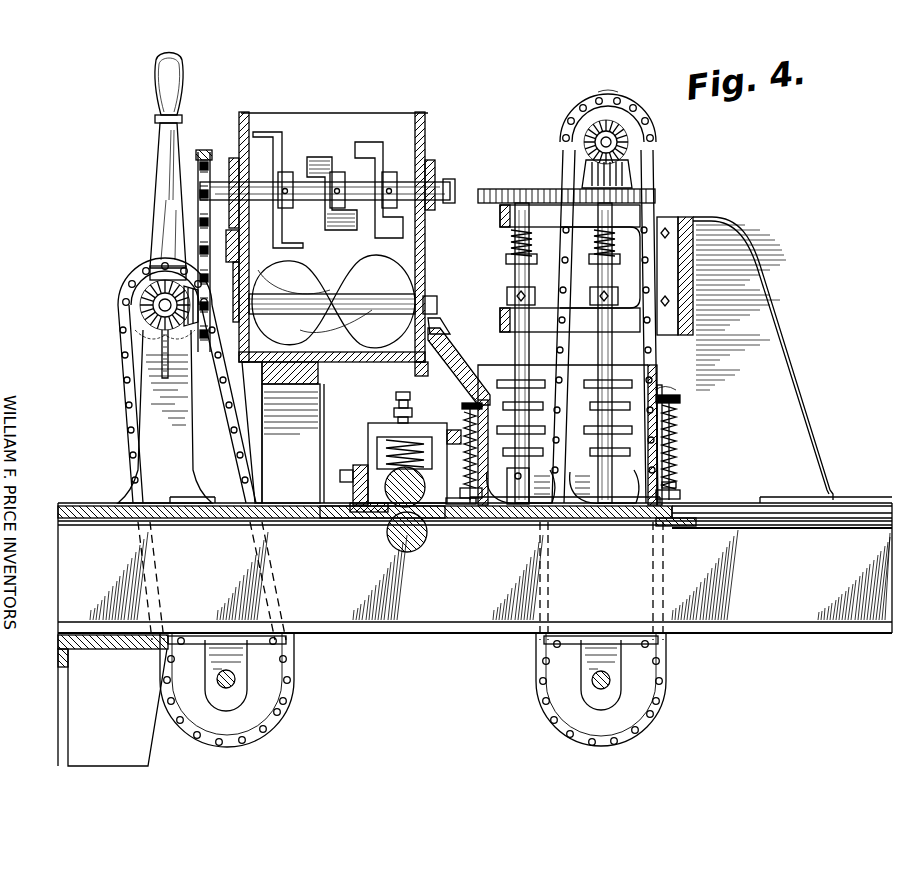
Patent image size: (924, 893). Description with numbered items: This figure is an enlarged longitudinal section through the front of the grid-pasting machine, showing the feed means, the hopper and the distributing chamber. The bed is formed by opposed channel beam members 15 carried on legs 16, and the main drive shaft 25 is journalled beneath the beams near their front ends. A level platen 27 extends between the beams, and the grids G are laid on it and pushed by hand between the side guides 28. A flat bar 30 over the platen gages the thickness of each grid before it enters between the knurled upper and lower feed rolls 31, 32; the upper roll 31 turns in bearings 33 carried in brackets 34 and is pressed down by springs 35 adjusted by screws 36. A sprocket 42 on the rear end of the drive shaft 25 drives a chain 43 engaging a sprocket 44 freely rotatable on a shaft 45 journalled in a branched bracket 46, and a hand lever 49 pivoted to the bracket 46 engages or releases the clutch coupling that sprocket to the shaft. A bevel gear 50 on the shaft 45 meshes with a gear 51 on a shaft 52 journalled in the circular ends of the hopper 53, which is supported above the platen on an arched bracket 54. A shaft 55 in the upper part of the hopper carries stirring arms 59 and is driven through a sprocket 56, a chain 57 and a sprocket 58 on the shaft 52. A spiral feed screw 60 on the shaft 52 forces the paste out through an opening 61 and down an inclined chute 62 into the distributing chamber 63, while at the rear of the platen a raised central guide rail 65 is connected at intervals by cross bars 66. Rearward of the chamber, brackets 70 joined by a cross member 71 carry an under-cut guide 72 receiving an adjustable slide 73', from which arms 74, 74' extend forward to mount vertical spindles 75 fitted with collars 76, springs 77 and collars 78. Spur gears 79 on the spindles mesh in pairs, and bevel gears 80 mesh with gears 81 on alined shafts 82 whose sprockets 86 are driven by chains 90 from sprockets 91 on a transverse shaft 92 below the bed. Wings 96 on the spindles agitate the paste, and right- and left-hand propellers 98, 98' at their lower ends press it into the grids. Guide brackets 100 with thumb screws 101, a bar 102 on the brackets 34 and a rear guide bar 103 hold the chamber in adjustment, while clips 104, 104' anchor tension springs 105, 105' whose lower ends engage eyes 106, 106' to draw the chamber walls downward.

The channel beam members 15 is at (410, 626).
The legs 16 is at (72, 720).
The main drive shaft 25 is at (226, 688).
The platen 27 is at (92, 518).
The guides 28 is at (186, 500).
The flat bar 30 is at (372, 512).
The upper feed roll 31 is at (370, 478).
The lower feed roll 32 is at (392, 548).
The bearings 33 is at (388, 470).
The brackets 34 is at (372, 424).
The springs 35 is at (378, 434).
The screws 36 is at (405, 396).
The sprocket 42 is at (292, 704).
The chain 43 is at (126, 428).
The sprocket 44 is at (128, 292).
The shaft 45 is at (145, 312).
The branched bracket 46 is at (184, 422).
The hand lever 49 is at (158, 108).
The bevel gear 50 is at (152, 276).
The bevel gear 51 is at (184, 368).
The shaft 52 is at (436, 302).
The hopper 53 is at (430, 138).
The arched bracket 54 is at (293, 443).
The shaft 55 is at (446, 184).
The sprocket 56 is at (198, 160).
The chain 57 is at (198, 232).
The sprocket 58 is at (224, 284).
The stirring arms 59 is at (334, 156).
The spiral feed screw 60 is at (358, 274).
The opening 61 is at (440, 332).
The inclined chute 62 is at (444, 356).
The distributing chamber 63 is at (492, 372).
The central raised angular guide rail 65 is at (790, 518).
The cross bars 66 is at (694, 524).
The raised brackets 70 is at (774, 392).
The cross member 71 is at (706, 228).
The vertical under-cut guide 72 is at (684, 214).
The slide 73' is at (605, 267).
The arms 74 is at (551, 321).
The arms 74' is at (551, 216).
The vertical spindles 75 is at (560, 350).
The collars 76 is at (506, 294).
The springs 77 is at (510, 244).
The collars 78 is at (540, 252).
The spur gears 79 is at (504, 196).
The bevel gears 80 is at (640, 172).
The bevel gears 81 is at (584, 148).
The alined shafts 82 is at (620, 134).
The sprockets 86 is at (604, 124).
The chains 90 is at (648, 346).
The sprockets 91 is at (562, 702).
The shaft 92 is at (602, 690).
The stirring elements or wings 96 is at (556, 406).
The distributing propeller 98 is at (520, 515).
The distributing propeller 98' is at (610, 515).
The guide brackets 100 is at (472, 500).
The thumb screws 101 is at (478, 444).
The bar 102 is at (450, 432).
The guide bar 103 is at (680, 496).
The clips 104 is at (455, 397).
The clips 104' is at (701, 394).
The coiled tension spring 105 is at (460, 525).
The coiled tension spring 105' is at (702, 445).
The eye 106 is at (472, 520).
The eye 106' is at (705, 470).
The grids G is at (268, 508).